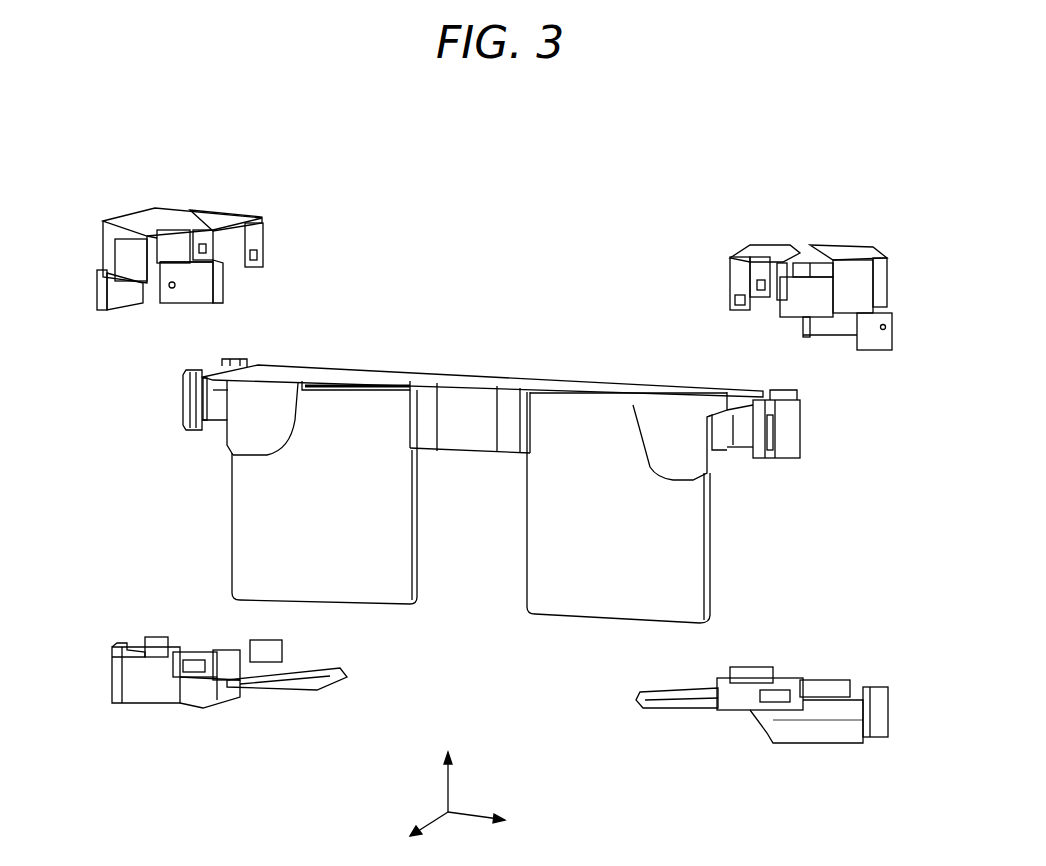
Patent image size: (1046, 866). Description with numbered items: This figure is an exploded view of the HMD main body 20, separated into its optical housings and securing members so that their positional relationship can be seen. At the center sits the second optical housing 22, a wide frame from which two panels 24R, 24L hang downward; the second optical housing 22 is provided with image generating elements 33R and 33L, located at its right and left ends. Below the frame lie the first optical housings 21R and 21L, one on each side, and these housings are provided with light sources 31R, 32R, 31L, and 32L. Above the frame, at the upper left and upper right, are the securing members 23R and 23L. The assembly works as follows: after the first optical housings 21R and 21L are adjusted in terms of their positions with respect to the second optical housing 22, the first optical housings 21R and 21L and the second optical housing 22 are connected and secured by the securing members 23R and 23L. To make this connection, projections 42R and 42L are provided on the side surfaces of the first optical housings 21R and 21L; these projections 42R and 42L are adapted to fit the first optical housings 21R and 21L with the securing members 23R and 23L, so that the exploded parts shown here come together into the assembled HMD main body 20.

The HMD main body 20 is at (521, 233).
The second optical housing 22 is at (484, 386).
The securing member 23R is at (195, 210).
The securing member 23L is at (812, 250).
The right panel 24R is at (353, 588).
The left panel 24L is at (600, 603).
The image generating element 33R is at (183, 403).
The image generating element 33L is at (785, 430).
The first optical housing 21R is at (147, 695).
The first optical housing 21L is at (812, 727).
The light source 31R is at (113, 673).
The light source 31L is at (882, 717).
The light source 32R is at (185, 650).
The light source 32L is at (838, 680).
The projection 42R is at (213, 678).
The projection 42L is at (745, 708).